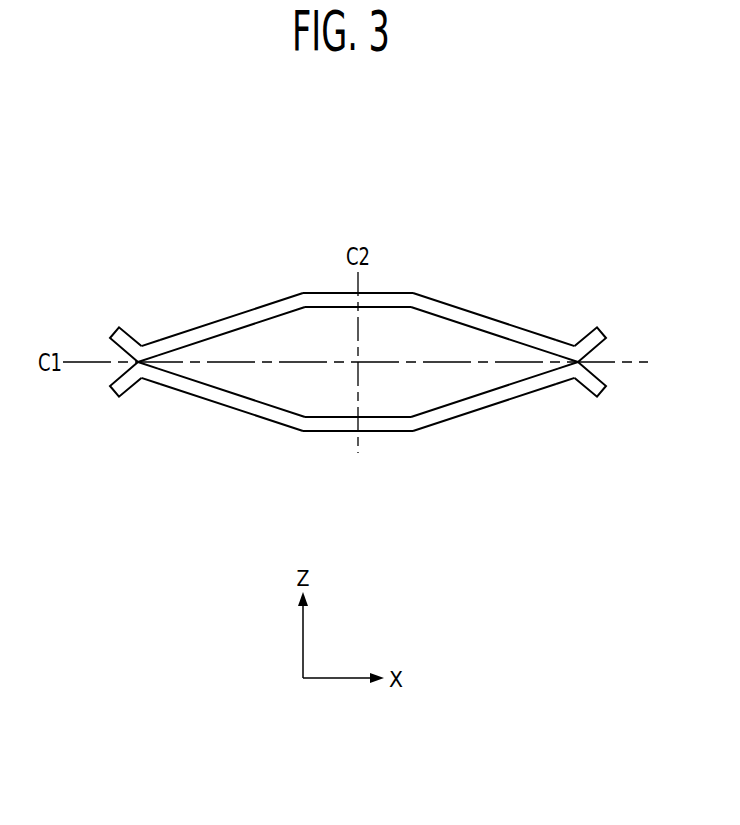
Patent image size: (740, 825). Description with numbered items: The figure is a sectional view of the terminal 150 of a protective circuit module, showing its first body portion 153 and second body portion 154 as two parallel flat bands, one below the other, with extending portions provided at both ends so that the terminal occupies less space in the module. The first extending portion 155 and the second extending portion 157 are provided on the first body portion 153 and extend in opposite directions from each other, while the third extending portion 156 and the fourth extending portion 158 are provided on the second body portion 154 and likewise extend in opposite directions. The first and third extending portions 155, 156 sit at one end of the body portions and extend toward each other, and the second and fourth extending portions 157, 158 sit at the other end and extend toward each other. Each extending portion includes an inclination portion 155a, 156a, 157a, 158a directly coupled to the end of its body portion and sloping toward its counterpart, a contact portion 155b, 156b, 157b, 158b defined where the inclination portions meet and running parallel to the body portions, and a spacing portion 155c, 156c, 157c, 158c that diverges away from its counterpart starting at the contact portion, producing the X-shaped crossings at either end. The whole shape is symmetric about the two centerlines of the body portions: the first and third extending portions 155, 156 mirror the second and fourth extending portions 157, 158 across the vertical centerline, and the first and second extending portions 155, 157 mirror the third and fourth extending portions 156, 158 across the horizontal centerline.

The terminal 150 is at (452, 178).
The first body portion 153 is at (385, 432).
The second body portion 154 is at (385, 293).
The first extending portion 155 is at (627, 476).
The inclination portion 155a is at (480, 412).
The contact portion 155b is at (573, 378).
The spacing portion 155c is at (585, 390).
The third extending portion 156 is at (627, 252).
The inclination portion 156a is at (480, 313).
The contact portion 156b is at (573, 346).
The spacing portion 156c is at (585, 334).
The second extending portion 157 is at (88, 476).
The inclination portion 157a is at (235, 412).
The contact portion 157b is at (142, 378).
The spacing portion 157c is at (131, 390).
The fourth extending portion 158 is at (88, 252).
The inclination portion 158a is at (235, 313).
The contact portion 158b is at (142, 346).
The spacing portion 158c is at (131, 334).